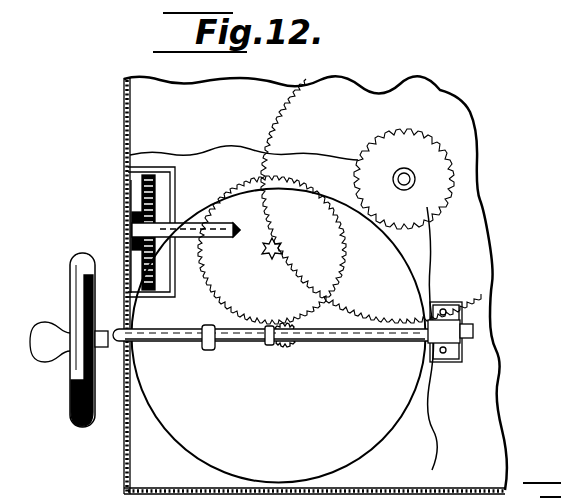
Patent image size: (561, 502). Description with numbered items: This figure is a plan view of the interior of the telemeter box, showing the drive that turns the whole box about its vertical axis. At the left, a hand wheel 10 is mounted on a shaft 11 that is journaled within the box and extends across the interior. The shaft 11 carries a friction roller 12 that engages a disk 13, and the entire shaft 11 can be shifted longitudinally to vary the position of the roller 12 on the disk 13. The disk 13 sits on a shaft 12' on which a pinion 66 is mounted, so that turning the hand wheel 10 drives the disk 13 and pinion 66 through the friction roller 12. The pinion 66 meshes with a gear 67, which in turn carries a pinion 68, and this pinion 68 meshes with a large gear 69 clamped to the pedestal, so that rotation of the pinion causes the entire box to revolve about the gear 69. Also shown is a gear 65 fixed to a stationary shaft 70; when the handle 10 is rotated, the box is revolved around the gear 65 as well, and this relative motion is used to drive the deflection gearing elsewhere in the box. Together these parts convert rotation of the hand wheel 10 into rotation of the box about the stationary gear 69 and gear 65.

The hand wheel 10 is at (95, 378).
The shaft 11 is at (172, 337).
The friction roller 12 is at (218, 354).
The shaft 12' is at (269, 355).
The disk 13 is at (279, 336).
The gear 65 is at (437, 213).
The pinion 66 is at (288, 346).
The gear 67 is at (272, 246).
The pinion 68 is at (270, 262).
The large gear 69 is at (371, 201).
The stationary shaft 70 is at (398, 180).